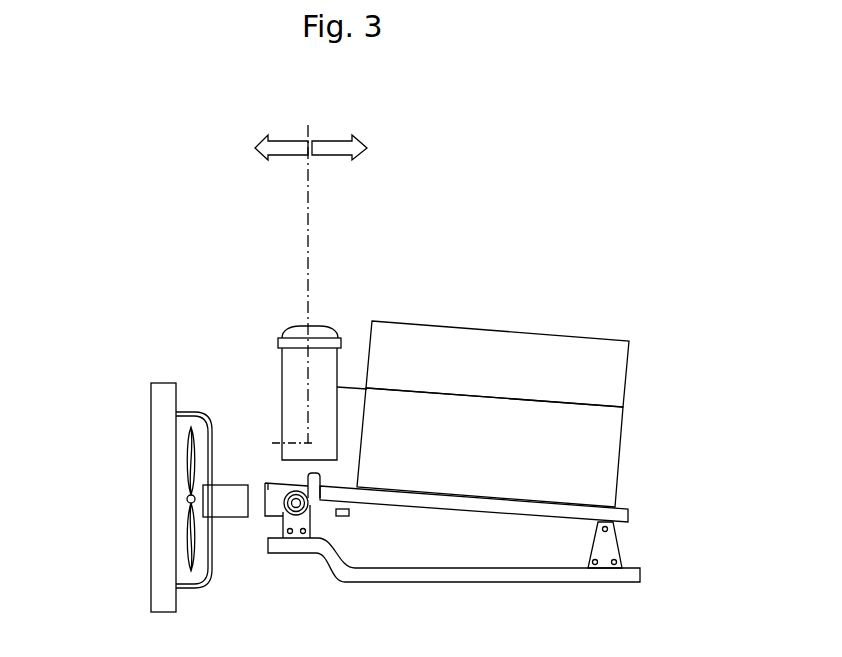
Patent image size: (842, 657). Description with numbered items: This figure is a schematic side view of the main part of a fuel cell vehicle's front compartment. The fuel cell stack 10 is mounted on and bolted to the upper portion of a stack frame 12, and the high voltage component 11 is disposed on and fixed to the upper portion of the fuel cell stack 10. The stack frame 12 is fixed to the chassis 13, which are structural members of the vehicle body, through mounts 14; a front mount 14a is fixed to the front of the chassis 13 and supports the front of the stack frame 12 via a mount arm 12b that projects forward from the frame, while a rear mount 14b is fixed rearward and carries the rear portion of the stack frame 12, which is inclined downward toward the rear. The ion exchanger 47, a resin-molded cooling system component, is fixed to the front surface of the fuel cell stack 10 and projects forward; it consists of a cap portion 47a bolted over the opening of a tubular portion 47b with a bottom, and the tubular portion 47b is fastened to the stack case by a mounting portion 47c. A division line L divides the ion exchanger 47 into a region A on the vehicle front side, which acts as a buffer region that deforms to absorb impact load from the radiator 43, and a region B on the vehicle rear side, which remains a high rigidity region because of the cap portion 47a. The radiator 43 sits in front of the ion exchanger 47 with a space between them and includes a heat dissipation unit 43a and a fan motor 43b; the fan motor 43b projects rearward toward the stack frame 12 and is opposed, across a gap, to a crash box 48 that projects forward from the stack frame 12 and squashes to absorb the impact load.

The fuel cell stack 10 is at (605, 463).
The high voltage component 11 is at (612, 374).
The stack frame 12 is at (526, 511).
The mount arm 12b is at (353, 505).
The chassis 13 is at (633, 577).
The mounts 14 is at (511, 568).
The front mount 14a is at (305, 518).
The rear mount 14b is at (607, 557).
The radiator 43 is at (145, 486).
The heat dissipation unit 43a is at (167, 578).
The fan motor 43b is at (228, 512).
The ion exchanger 47 is at (312, 343).
The cap portion 47a is at (322, 328).
The tubular portion 47b is at (283, 386).
The mounting portion 47c is at (342, 383).
The crash box 48 is at (282, 480).
The region A is at (285, 146).
The region B is at (335, 145).
The division line L is at (310, 197).